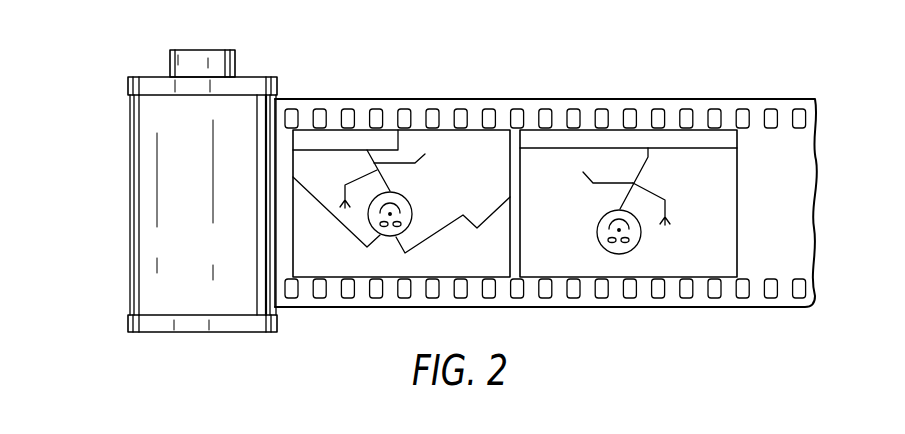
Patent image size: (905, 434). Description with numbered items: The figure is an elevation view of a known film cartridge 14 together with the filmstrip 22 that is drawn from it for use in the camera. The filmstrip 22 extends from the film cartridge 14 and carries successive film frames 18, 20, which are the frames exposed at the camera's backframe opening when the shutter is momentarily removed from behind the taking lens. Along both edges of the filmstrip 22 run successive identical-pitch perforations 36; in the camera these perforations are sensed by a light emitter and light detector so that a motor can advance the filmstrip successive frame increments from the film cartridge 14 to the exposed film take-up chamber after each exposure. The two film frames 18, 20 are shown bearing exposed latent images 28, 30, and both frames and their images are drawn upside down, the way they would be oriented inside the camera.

The film cartridge 14 is at (148, 146).
The film frame 18 is at (737, 226).
The film frame 20 is at (273, 280).
The filmstrip 22 is at (778, 92).
The exposed latent image 28 is at (559, 167).
The exposed latent image 30 is at (447, 153).
The perforations 36 is at (767, 110).